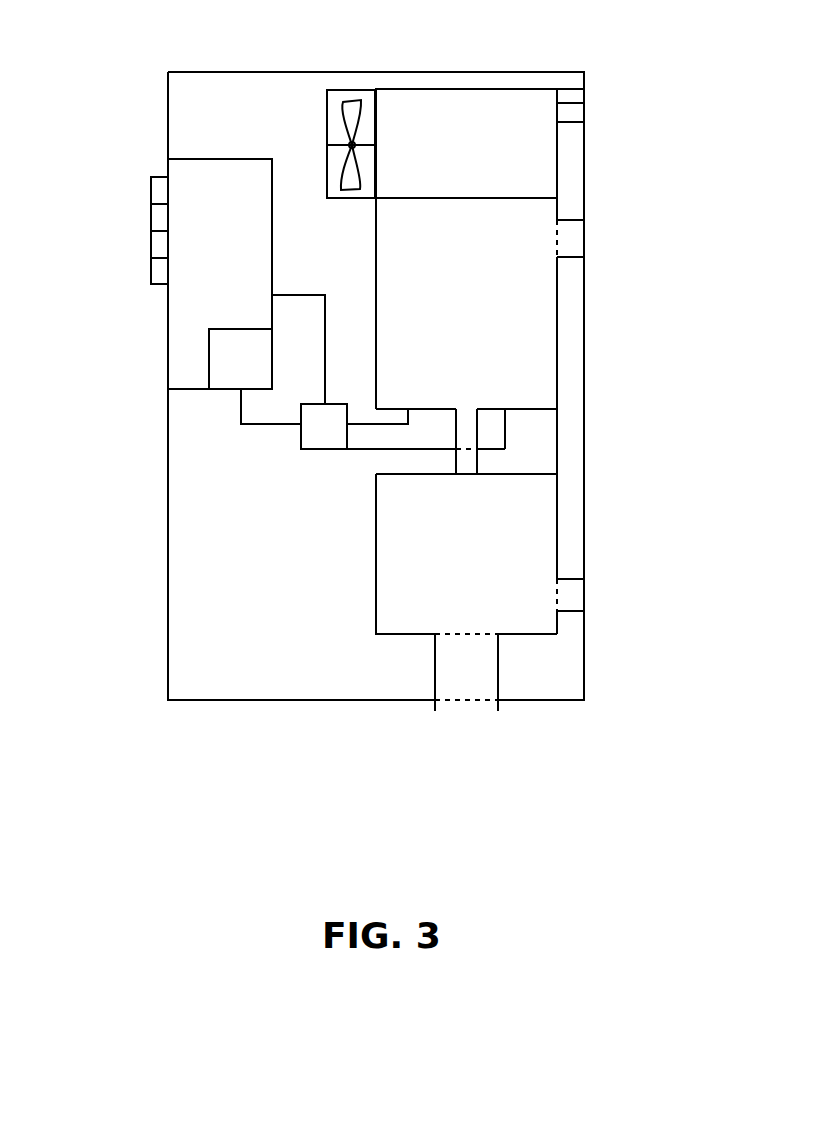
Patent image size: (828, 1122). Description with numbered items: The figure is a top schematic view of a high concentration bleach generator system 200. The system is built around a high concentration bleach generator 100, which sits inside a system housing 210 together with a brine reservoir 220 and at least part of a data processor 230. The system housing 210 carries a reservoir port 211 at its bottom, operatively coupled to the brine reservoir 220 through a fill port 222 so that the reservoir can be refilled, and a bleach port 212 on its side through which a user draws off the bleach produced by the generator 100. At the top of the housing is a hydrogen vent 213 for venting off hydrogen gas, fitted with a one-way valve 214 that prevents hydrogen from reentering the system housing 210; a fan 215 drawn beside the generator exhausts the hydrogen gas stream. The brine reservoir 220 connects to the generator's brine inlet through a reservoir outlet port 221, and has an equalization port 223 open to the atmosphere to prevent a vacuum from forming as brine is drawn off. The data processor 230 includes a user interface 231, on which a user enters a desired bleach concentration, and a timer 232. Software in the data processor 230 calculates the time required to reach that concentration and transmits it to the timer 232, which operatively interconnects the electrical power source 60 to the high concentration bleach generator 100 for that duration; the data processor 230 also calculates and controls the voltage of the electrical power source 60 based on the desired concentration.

The high concentration bleach generator system 200 is at (260, 740).
The system housing 210 is at (168, 72).
The reservoir port 211 is at (472, 700).
The bleach port 212 is at (577, 240).
The hydrogen vent 213 is at (585, 90).
The one-way valve 214 is at (580, 114).
The fan 215 is at (353, 90).
The brine reservoir 220 is at (486, 567).
The reservoir outlet port 221 is at (466, 470).
The fill port 222 is at (463, 634).
The equalization port 223 is at (583, 597).
The data processor 230 is at (247, 199).
The user interface 231 is at (151, 177).
The timer 232 is at (262, 370).
The electrical power source 60 is at (340, 437).
The high concentration bleach generator 100 is at (486, 300).